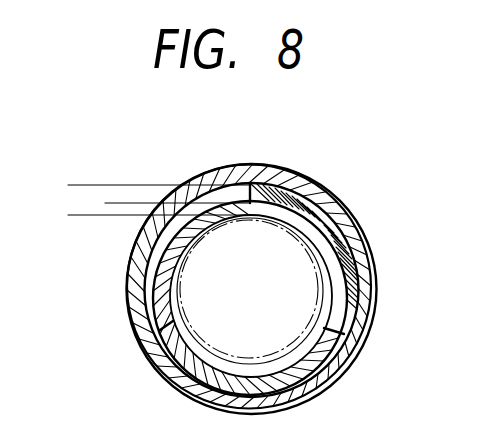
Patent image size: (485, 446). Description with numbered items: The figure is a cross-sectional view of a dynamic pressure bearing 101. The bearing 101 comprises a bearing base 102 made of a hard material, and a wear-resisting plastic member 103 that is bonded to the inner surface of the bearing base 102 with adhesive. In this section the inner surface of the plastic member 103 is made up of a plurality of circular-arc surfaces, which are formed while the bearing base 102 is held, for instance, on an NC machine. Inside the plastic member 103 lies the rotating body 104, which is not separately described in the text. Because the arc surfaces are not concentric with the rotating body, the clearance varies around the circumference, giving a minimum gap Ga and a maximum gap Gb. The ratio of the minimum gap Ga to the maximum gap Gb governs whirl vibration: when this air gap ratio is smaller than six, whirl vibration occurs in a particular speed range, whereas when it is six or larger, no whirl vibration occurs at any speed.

The bearing 101 is at (255, 164).
The bearing base 102 is at (336, 199).
The plastic member 103 is at (343, 380).
The shaft 104 is at (307, 297).
The minimum gap Ga is at (118, 180).
The maximum gap Gb is at (78, 185).